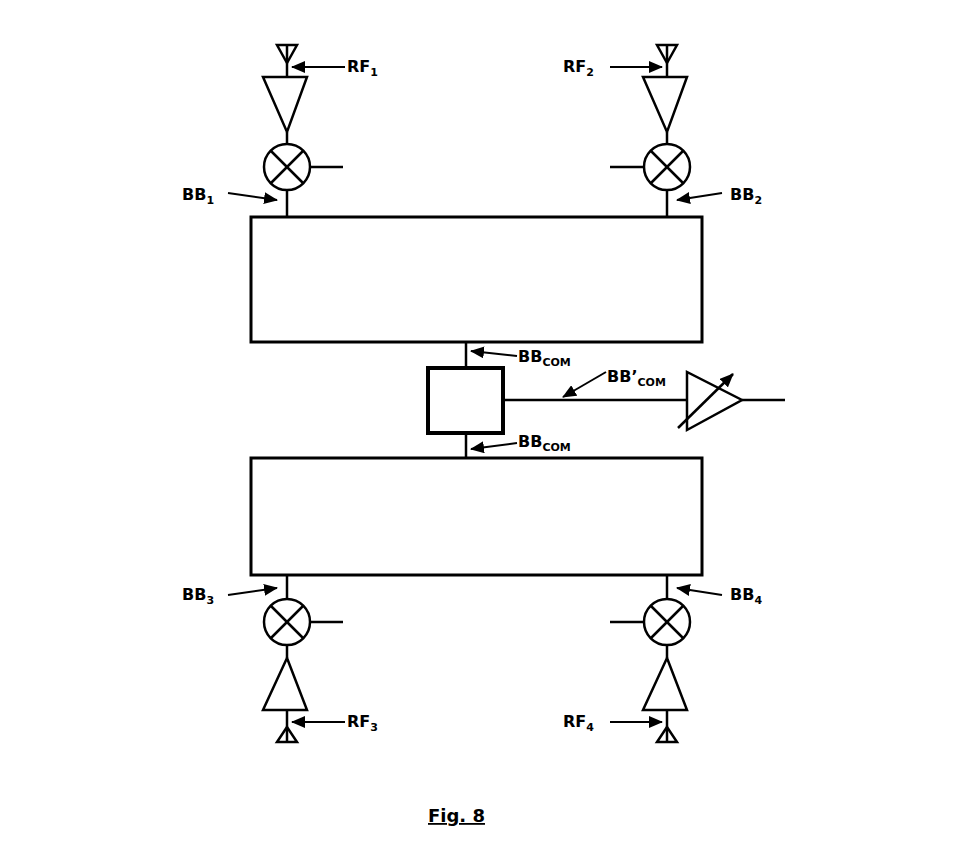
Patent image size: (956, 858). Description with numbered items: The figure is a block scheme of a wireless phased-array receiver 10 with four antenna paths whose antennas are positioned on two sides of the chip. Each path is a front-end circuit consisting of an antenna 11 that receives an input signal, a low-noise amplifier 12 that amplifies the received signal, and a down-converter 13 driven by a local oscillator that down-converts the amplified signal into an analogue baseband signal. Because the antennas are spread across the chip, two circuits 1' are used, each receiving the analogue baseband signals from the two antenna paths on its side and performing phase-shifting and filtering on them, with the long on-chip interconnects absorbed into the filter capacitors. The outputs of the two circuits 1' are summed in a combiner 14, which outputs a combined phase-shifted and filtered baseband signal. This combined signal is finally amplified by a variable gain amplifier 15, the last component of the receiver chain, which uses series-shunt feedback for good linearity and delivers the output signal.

The phased-array receiver 10 is at (98, 66).
The circuit 1' is at (476, 396).
The antenna 11 is at (477, 396).
The low-noise amplifier 12 is at (475, 402).
The down-converter 13 is at (477, 393).
The combiner 14 is at (480, 400).
The variable gain amplifier 15 is at (762, 388).